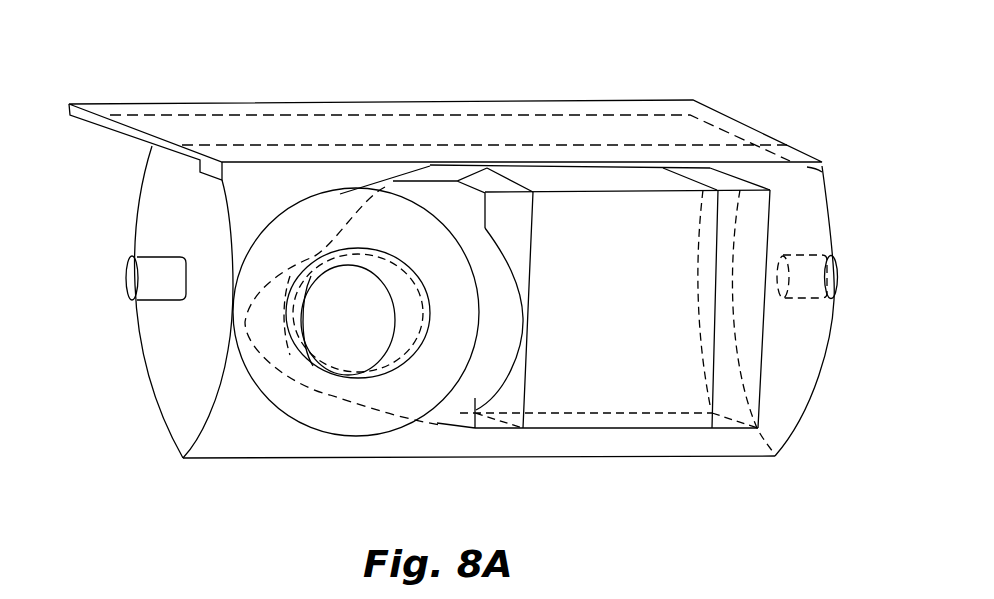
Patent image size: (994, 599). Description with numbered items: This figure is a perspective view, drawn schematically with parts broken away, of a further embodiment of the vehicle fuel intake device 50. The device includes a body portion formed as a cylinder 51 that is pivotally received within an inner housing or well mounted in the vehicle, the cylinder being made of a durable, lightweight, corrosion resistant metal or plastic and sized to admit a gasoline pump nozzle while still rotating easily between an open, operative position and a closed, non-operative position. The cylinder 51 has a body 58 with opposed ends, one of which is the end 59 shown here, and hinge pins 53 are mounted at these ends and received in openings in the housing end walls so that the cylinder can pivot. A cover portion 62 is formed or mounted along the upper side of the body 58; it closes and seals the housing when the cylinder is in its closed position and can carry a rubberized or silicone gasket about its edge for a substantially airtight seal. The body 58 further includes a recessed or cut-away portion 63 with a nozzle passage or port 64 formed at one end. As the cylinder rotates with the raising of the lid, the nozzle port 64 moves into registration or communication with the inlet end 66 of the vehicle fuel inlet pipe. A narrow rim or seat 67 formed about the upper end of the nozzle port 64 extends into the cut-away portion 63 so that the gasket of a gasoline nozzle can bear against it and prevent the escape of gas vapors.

The fuel intake device 50 is at (471, 276).
The cylinder 51 is at (527, 442).
The hinge pins 53 is at (833, 258).
The body 58 is at (267, 422).
The end 59 is at (802, 387).
The cover portion 62 is at (648, 107).
The cut-away portion 63 is at (655, 372).
The nozzle port 64 is at (360, 322).
The inlet end 66 is at (273, 357).
The rim 67 is at (432, 365).